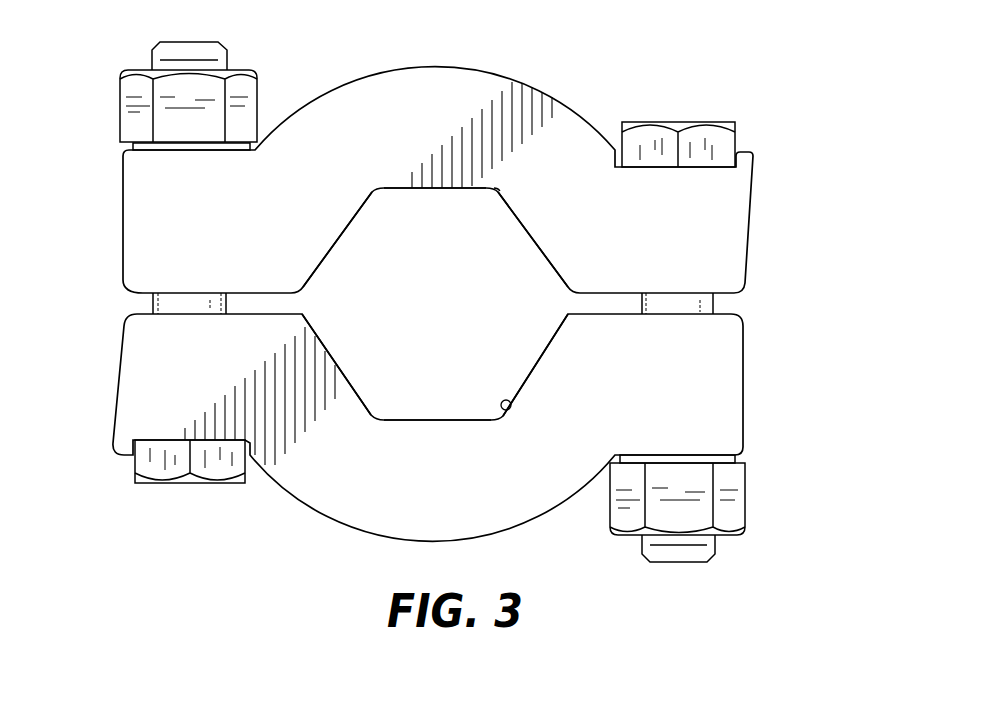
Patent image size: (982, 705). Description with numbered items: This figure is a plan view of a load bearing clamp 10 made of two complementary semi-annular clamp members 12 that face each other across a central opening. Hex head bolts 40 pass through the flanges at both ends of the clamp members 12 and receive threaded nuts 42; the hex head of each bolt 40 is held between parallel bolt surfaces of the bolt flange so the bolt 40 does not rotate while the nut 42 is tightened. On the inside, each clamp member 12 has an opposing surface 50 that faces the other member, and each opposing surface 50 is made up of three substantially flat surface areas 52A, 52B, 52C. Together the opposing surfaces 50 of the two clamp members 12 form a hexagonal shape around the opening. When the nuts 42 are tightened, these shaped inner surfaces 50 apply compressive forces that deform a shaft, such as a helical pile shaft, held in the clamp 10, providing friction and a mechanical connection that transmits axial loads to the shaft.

The clamp 10 is at (700, 32).
The clamp member 12 is at (450, 78).
The hex head bolt 40 is at (695, 137).
The threaded nut 42 is at (140, 90).
The opposing surface 50 is at (500, 190).
The flat surface area 52A is at (331, 247).
The flat surface area 52B is at (432, 188).
The flat surface area 52C is at (535, 240).